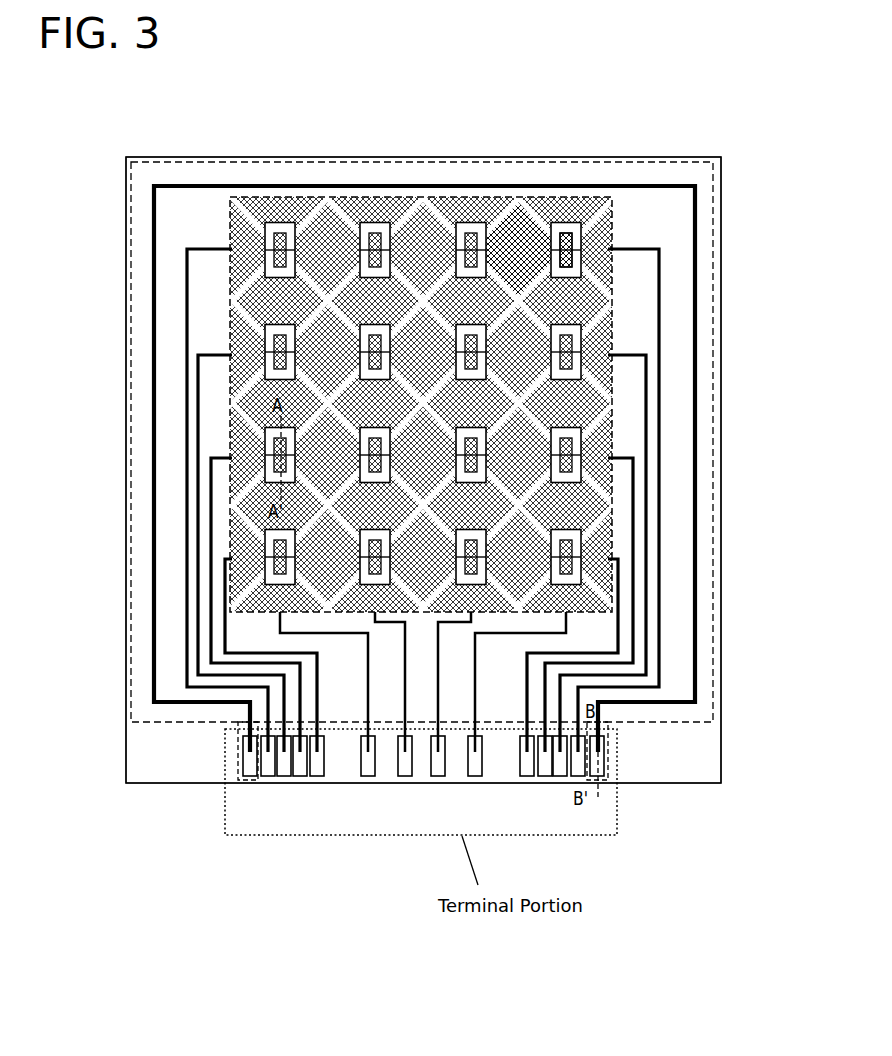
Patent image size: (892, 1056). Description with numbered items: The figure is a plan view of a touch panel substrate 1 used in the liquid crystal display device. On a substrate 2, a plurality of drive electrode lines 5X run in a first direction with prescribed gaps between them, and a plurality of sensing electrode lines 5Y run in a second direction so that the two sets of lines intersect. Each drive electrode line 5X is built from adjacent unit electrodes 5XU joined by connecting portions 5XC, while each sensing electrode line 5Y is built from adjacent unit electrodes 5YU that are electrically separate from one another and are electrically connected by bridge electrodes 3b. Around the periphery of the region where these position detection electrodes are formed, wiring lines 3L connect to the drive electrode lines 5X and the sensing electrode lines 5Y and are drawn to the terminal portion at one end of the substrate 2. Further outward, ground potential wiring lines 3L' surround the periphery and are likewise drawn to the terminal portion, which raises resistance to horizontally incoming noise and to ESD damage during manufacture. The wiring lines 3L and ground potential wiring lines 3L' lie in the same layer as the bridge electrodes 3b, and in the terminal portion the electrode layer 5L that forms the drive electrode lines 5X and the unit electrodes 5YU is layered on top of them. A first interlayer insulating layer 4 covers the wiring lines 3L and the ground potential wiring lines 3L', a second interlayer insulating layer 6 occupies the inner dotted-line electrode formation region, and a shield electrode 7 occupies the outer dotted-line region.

The touch panel substrate 1 is at (776, 110).
The substrate 2 is at (703, 752).
The bridge electrode 3b is at (572, 262).
The wiring line 3L is at (387, 543).
The ground potential wiring line 3L' is at (657, 500).
The first interlayer insulating layer 4 is at (545, 228).
The electrode layer 5L is at (607, 763).
The drive electrode line 5X is at (228, 230).
The connecting portion 5XC is at (472, 236).
The unit electrode 5XU is at (240, 212).
The sensing electrode line 5Y is at (253, 198).
The unit electrode 5YU is at (282, 212).
The second interlayer insulating layer 6 is at (612, 326).
The shield electrode 7 is at (714, 600).